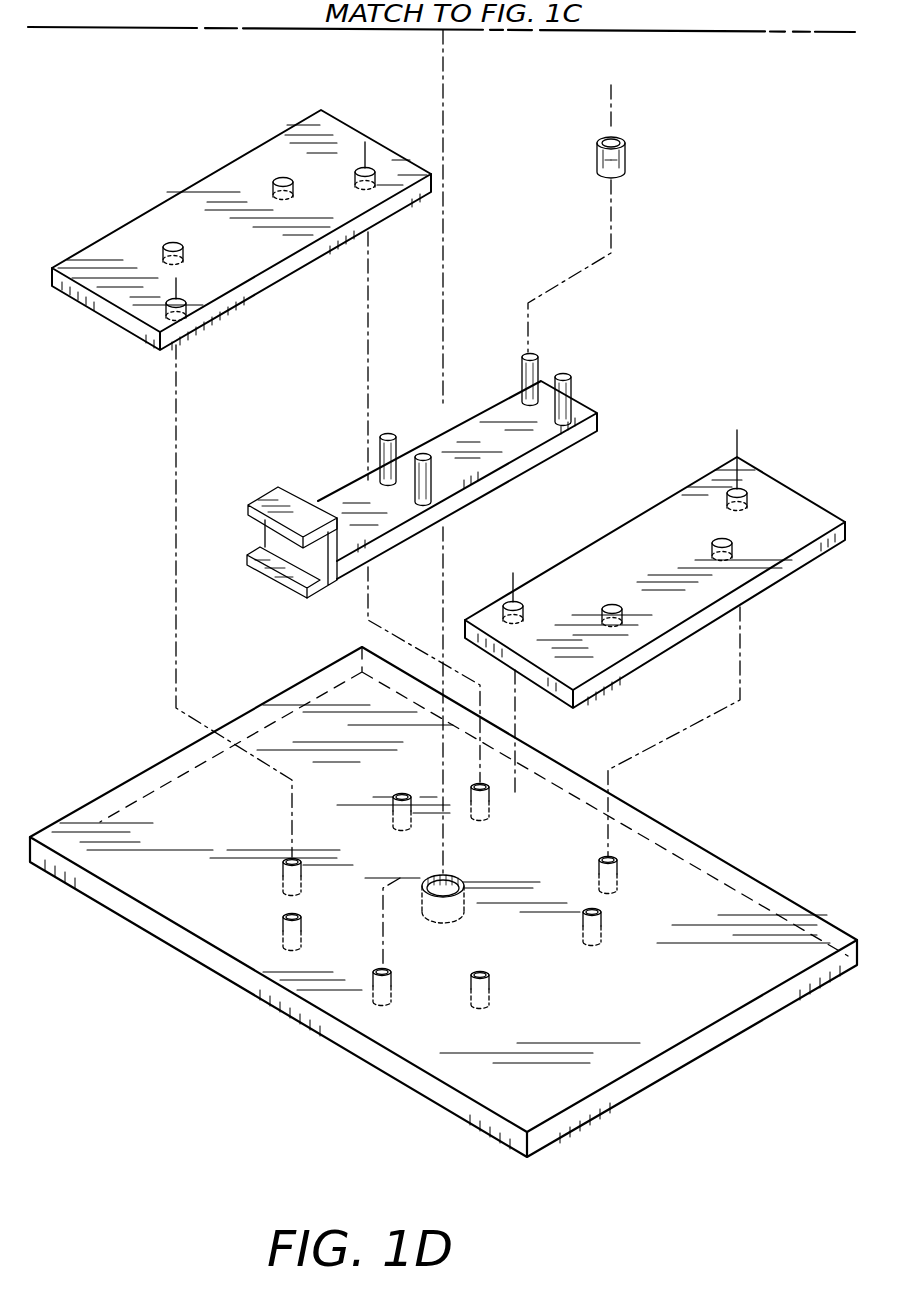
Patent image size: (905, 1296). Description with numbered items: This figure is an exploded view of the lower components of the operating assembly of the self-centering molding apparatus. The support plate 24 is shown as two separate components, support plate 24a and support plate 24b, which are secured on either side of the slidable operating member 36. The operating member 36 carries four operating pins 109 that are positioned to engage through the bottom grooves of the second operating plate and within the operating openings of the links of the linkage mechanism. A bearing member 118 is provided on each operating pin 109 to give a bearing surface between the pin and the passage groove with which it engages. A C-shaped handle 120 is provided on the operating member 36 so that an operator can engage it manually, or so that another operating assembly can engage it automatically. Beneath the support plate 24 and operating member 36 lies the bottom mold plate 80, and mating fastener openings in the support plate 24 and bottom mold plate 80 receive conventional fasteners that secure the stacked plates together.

The support plate 24 is at (241, 217).
The support plate component 24b is at (333, 128).
The bearing member 118 is at (630, 158).
The operating pins 109 is at (572, 380).
The operating member 36 is at (611, 399).
The C-shaped handle 120 is at (262, 490).
The support plate component 24a is at (783, 518).
The bottom mold plate 80 is at (735, 881).